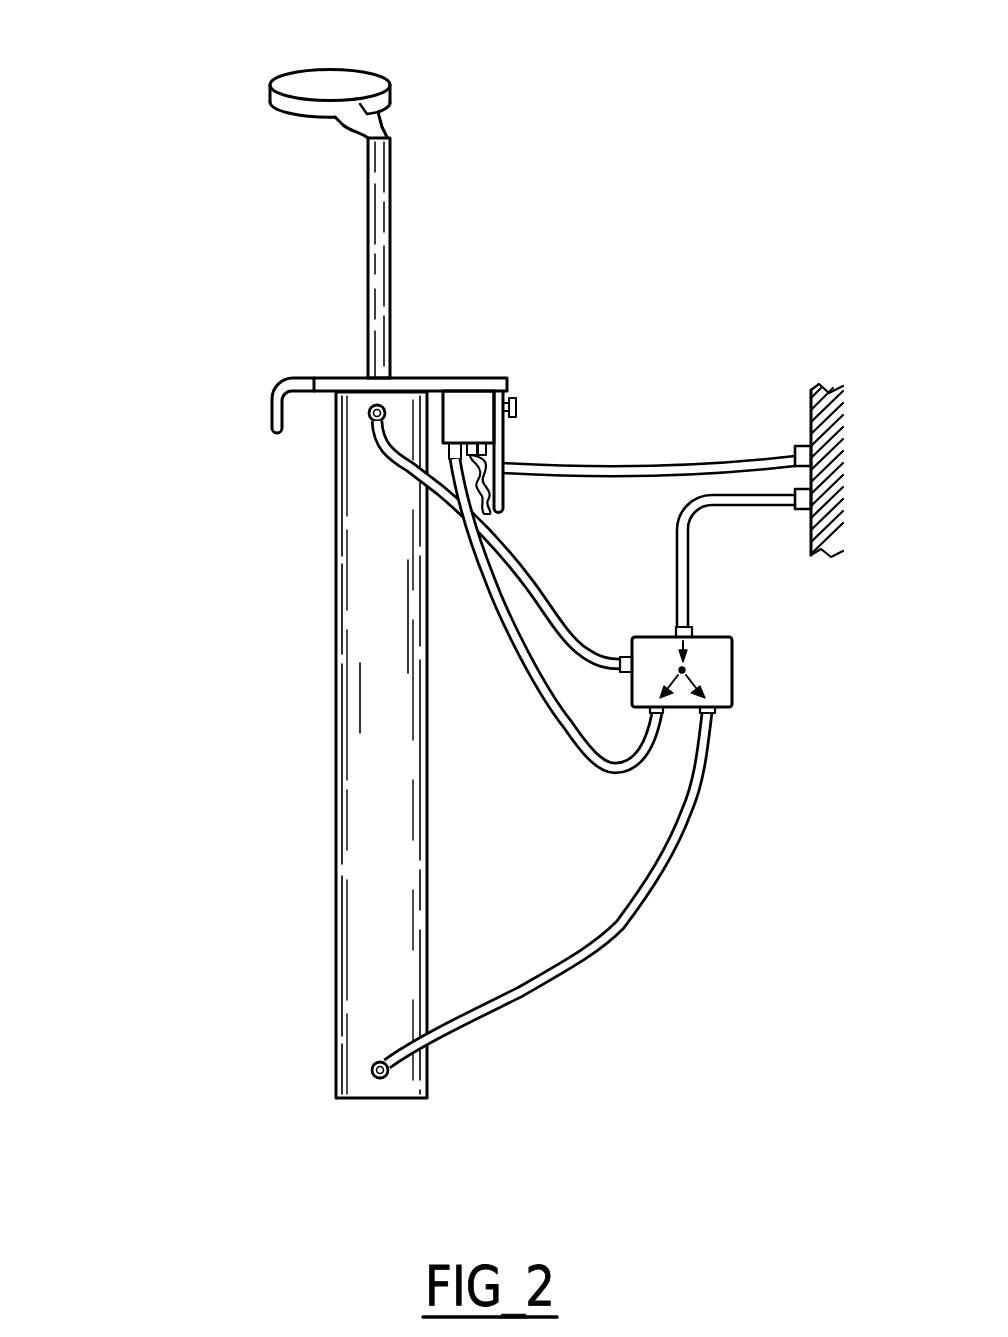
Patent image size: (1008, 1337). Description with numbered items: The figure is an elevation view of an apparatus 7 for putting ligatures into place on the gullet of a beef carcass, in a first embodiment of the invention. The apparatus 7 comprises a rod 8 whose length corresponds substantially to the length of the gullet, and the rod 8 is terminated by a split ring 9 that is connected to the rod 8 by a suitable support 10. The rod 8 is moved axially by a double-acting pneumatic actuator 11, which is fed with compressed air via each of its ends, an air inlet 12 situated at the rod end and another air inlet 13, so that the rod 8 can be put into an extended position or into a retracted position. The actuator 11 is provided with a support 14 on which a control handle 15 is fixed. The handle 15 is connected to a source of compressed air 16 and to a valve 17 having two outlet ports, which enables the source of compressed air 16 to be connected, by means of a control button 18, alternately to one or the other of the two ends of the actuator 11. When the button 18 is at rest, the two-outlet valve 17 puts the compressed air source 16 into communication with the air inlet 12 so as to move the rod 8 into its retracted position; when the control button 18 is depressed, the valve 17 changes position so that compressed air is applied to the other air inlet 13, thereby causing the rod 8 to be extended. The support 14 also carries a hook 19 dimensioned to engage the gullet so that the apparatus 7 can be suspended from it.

The apparatus 7 is at (256, 722).
The rod 8 is at (391, 233).
The split ring 9 is at (352, 82).
The support 10 is at (381, 128).
The double-acting pneumatic actuator 11 is at (397, 825).
The air inlet 12 is at (358, 427).
The air inlet 13 is at (371, 1068).
The support 14 is at (440, 383).
The control handle 15 is at (493, 453).
The source of compressed air 16 is at (807, 433).
The valve 17 is at (713, 667).
The control button 18 is at (520, 405).
The hook 19 is at (273, 410).